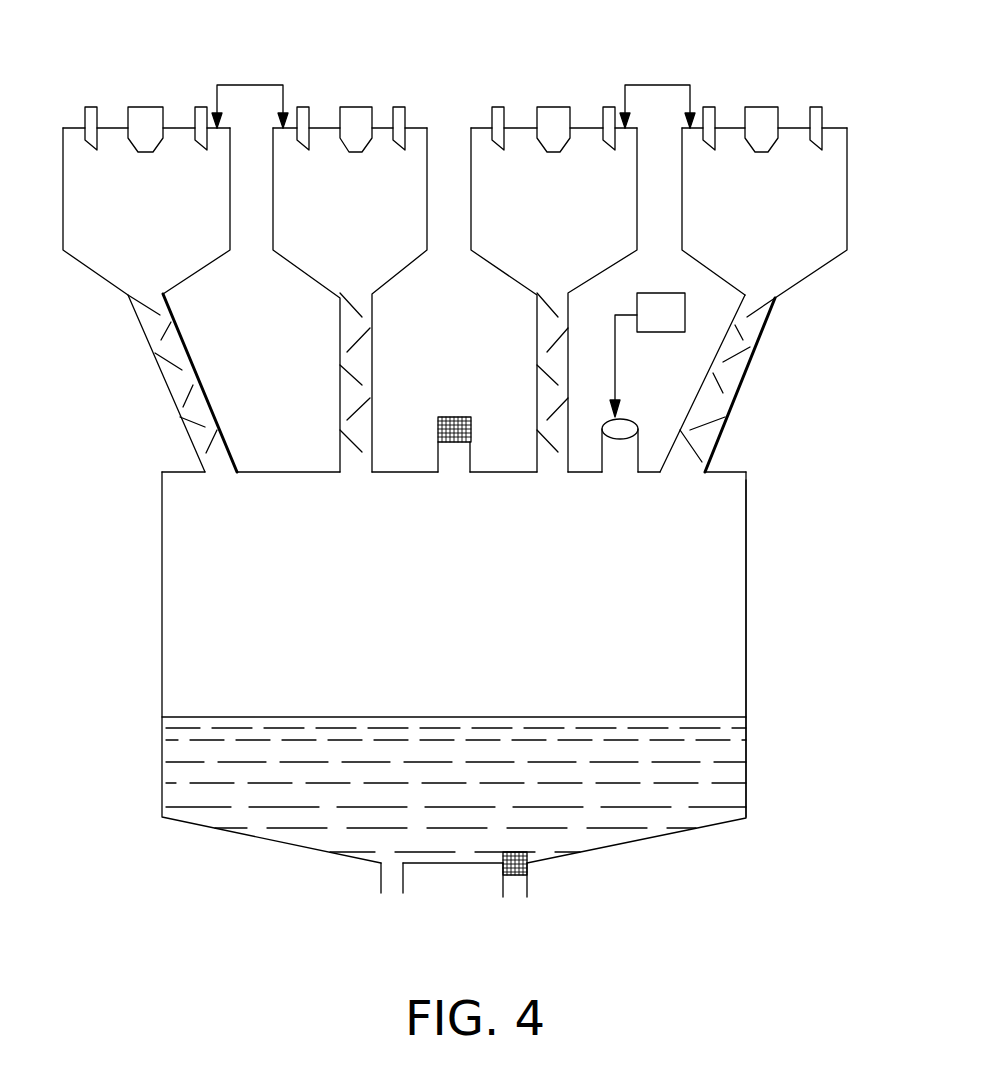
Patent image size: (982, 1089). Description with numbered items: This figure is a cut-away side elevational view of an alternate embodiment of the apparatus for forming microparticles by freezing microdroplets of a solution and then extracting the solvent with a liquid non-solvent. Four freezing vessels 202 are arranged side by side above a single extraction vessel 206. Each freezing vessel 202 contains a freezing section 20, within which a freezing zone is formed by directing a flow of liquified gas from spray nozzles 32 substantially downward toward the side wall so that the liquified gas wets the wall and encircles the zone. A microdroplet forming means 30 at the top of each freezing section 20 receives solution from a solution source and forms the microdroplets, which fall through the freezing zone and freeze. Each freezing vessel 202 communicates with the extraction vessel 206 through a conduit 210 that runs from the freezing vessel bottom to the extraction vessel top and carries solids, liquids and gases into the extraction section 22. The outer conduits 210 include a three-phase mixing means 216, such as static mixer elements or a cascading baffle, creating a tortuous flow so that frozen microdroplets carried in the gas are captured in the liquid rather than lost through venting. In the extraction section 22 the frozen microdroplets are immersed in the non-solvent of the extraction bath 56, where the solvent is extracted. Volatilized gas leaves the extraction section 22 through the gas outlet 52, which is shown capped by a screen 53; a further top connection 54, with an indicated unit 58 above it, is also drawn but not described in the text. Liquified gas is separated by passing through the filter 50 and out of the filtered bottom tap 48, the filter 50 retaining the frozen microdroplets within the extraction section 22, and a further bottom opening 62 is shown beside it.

The freezing section 20 is at (107, 257).
The freezing vessel 202 is at (250, 85).
The spray nozzle 32 is at (302, 117).
The microdroplet forming means 30 is at (553, 118).
The extraction section 22 is at (437, 618).
The extraction vessel 206 is at (761, 620).
The conduit 210 is at (751, 383).
The three-phase mixing means 216 is at (732, 373).
The gas outlet 52 is at (447, 462).
The screen 53 is at (457, 417).
The pipe 54 is at (623, 427).
The controller 58 is at (648, 326).
The extraction bath 56 is at (528, 780).
The drain outlet 62 is at (387, 878).
The filtered bottom tap 48 is at (508, 887).
The filter 50 is at (525, 868).